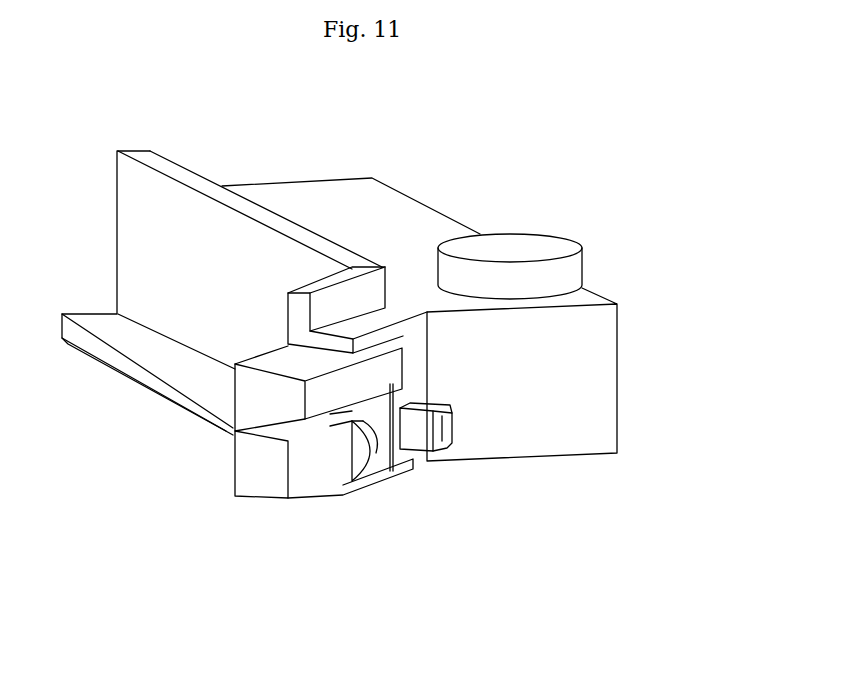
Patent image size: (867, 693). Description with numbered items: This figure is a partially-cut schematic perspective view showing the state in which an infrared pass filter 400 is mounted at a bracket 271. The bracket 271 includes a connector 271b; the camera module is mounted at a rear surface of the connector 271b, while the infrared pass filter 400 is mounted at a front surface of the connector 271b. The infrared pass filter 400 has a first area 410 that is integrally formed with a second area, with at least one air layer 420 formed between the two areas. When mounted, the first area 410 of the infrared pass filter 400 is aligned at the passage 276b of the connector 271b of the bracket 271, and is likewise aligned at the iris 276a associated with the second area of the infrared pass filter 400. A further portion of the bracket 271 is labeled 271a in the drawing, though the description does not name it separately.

The bracket 271 is at (603, 260).
The side wall plate 271a is at (335, 197).
The connector 271b is at (372, 317).
The iris 276a is at (362, 462).
The passage 276b is at (370, 397).
The infrared pass filter 400 is at (270, 472).
The first area 410 is at (277, 402).
The air layer 420 is at (273, 482).